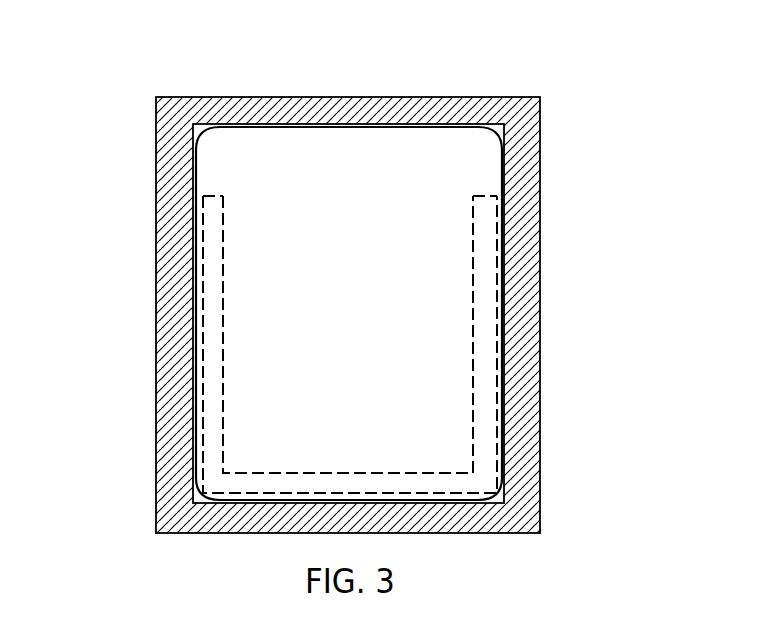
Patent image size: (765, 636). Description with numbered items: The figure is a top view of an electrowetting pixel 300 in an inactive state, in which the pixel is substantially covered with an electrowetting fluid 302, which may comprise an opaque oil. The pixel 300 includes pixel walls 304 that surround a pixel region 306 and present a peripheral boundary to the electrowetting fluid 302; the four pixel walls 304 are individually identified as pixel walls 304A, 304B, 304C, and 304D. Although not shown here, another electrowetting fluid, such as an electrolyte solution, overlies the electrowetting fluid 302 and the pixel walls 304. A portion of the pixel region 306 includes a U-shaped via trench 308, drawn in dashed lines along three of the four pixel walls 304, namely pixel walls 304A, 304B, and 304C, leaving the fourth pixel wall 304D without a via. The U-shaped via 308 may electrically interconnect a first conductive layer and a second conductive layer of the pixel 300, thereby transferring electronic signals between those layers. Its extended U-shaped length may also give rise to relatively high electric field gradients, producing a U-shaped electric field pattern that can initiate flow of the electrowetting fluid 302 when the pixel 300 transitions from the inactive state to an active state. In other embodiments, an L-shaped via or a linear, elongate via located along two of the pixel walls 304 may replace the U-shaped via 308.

The electrowetting pixel 300 is at (595, 48).
The electrowetting fluid 302 is at (210, 136).
The pixel walls 304 is at (358, 333).
The pixel wall 304A is at (540, 397).
The pixel wall 304B is at (497, 533).
The pixel wall 304C is at (156, 468).
The pixel wall 304D is at (275, 96).
The pixel region 306 is at (367, 311).
The U-shaped via trench 308 is at (203, 260).